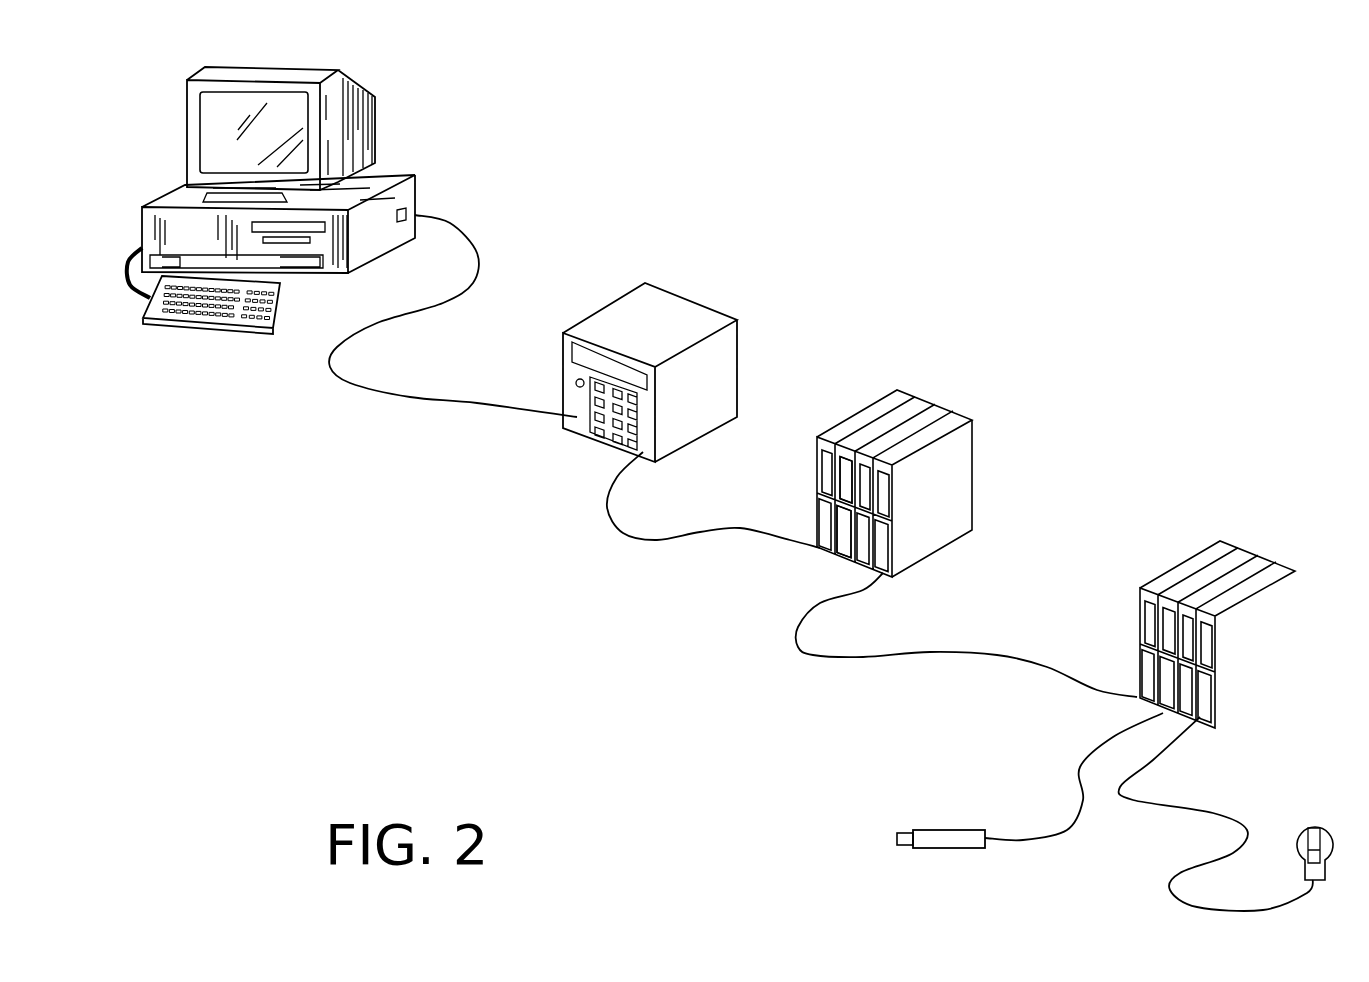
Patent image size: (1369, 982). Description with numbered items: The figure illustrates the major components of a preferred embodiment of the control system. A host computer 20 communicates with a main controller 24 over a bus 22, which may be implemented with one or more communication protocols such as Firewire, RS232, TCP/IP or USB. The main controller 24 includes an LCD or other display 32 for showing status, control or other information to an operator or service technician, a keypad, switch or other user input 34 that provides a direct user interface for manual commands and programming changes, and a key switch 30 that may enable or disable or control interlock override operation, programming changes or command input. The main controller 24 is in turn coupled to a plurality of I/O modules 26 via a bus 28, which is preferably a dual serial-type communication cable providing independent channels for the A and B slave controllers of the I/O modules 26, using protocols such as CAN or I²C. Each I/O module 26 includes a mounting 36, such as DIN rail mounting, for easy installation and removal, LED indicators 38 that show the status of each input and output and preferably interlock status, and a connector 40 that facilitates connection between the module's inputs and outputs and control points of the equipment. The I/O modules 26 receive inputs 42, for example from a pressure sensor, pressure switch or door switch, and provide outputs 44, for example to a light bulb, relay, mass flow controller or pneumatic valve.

The host computer 20 is at (187, 133).
The bus 22 is at (480, 255).
The main controller 24 is at (628, 370).
The I/O modules 26 is at (1038, 541).
The bus 28 is at (670, 547).
The key switch 30 is at (536, 367).
The display 32 is at (590, 329).
The user input 34 is at (598, 434).
The mounting 36 is at (973, 498).
The LED indicators 38 is at (800, 474).
The connector 40 is at (813, 553).
The inputs 42 is at (947, 830).
The outputs 44 is at (1313, 817).